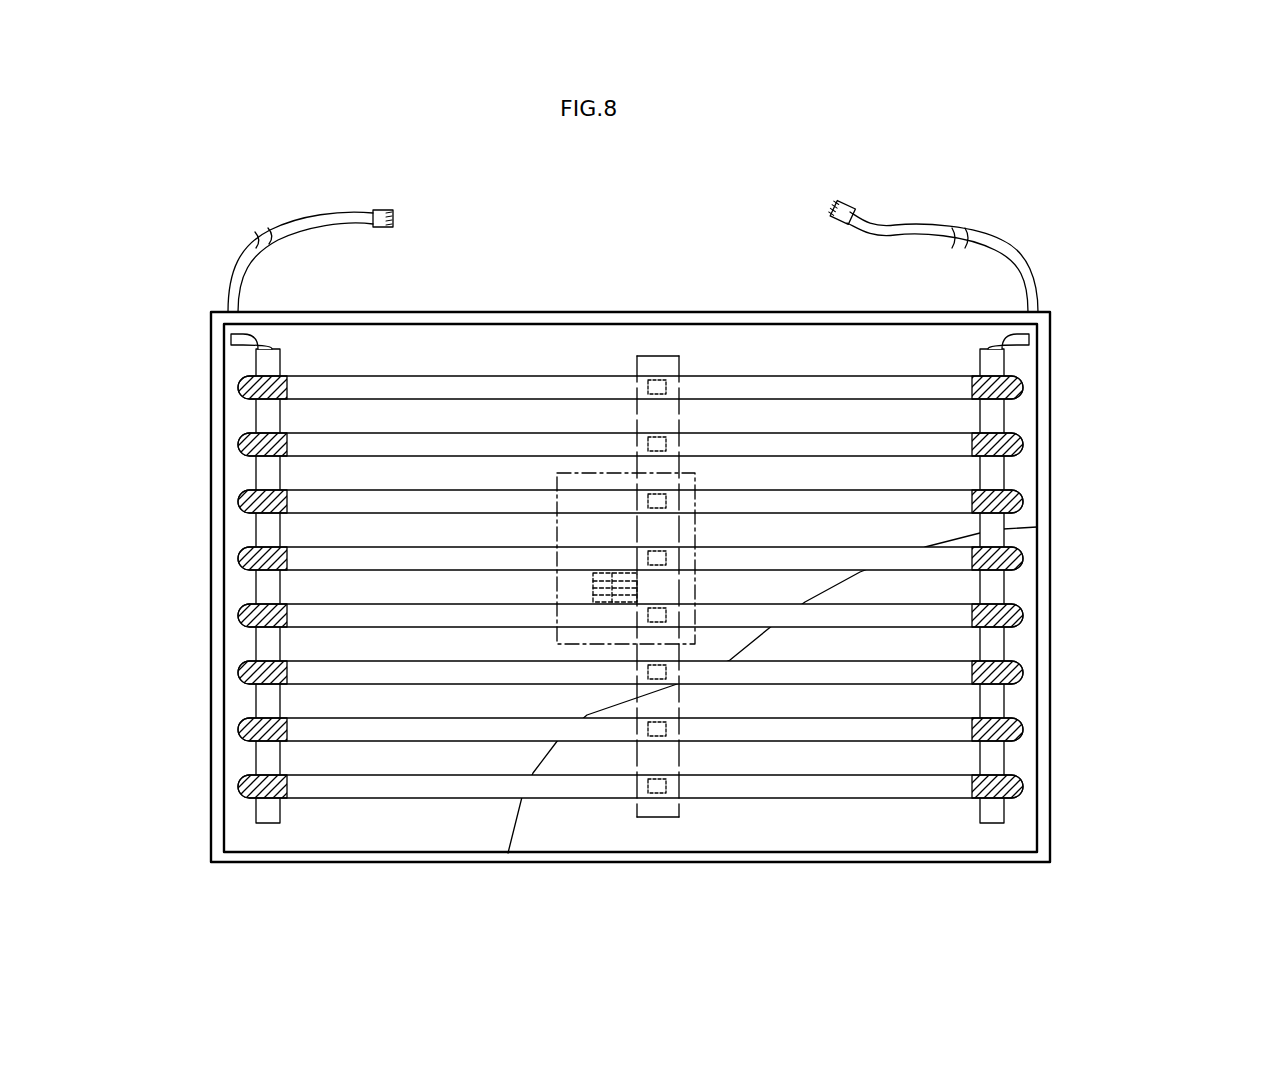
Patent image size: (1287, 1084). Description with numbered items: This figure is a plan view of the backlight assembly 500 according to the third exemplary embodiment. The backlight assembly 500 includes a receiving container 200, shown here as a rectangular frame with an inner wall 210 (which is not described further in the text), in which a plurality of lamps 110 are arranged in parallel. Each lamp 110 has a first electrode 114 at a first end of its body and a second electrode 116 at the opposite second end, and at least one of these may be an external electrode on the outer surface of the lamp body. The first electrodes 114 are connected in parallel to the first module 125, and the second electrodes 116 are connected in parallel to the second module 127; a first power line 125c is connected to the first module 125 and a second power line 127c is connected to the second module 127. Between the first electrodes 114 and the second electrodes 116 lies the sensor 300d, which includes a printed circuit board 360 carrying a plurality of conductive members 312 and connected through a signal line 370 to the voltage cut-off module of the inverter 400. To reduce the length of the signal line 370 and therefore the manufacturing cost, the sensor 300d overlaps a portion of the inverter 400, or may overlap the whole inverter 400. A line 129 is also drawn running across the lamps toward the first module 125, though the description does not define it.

The backlight assembly 500 is at (1163, 310).
The receiving container 200 is at (1053, 487).
The inner frame 210 is at (1029, 828).
The sensor cable 129 is at (438, 838).
The second module 127 is at (236, 585).
The first module 125 is at (1013, 583).
The second power line 127c is at (247, 237).
The first power line 125c is at (997, 250).
The lamp 110 is at (457, 384).
The second electrode 116 is at (245, 385).
The first electrode 114 is at (1014, 382).
The inverter 400 is at (566, 473).
The signal line 370 is at (597, 573).
The printed circuit board 360 is at (655, 365).
The conductive member 312 is at (662, 378).
The sensor 300d is at (664, 588).